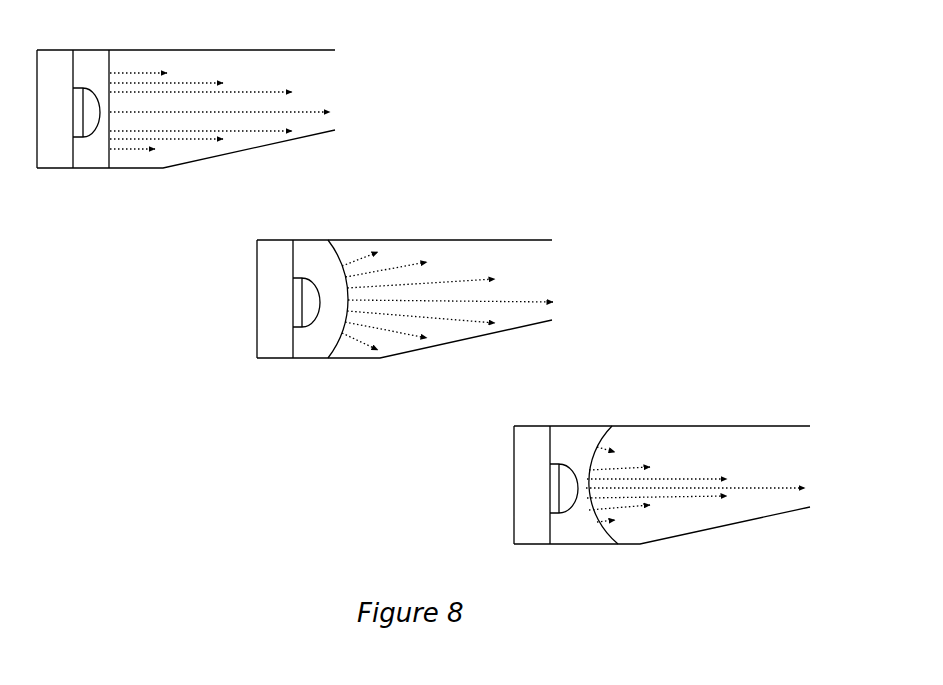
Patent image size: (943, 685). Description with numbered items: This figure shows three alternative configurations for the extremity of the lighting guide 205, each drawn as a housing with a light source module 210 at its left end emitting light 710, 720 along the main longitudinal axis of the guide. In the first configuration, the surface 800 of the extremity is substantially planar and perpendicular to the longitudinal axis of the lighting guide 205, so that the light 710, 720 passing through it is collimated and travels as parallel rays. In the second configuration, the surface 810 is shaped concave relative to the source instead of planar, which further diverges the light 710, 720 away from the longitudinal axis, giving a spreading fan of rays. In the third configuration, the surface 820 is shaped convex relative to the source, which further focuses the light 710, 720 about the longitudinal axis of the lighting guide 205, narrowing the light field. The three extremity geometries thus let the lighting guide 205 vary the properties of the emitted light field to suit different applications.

The lighting guide 205 is at (147, 62).
The light source module (LED) 210 is at (57, 155).
The emitted light 710 is at (348, 307).
The emitted light 720 is at (303, 112).
The planar surface 800 is at (108, 62).
The concave surface 810 is at (340, 255).
The convex surface 820 is at (597, 445).